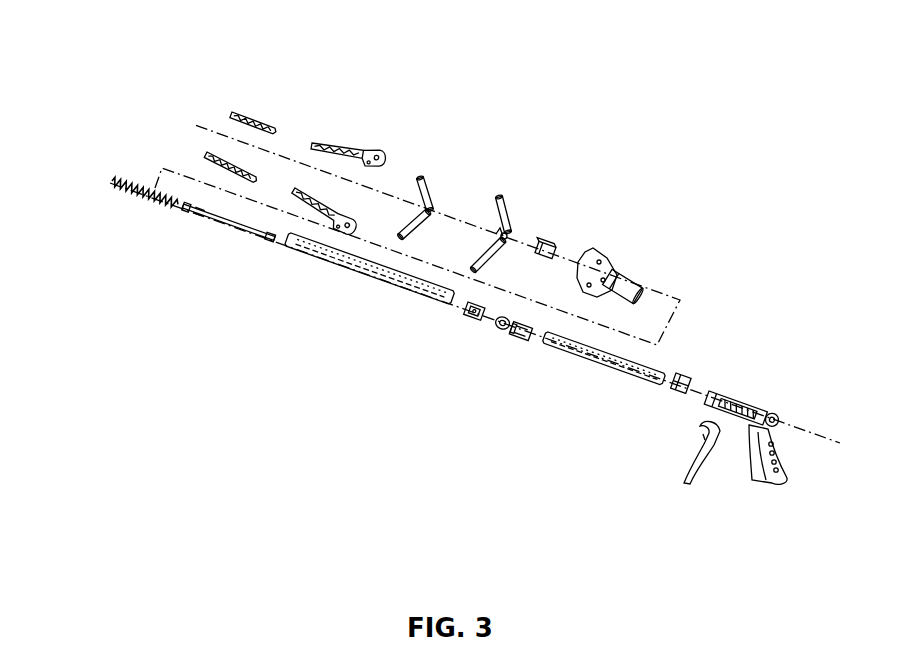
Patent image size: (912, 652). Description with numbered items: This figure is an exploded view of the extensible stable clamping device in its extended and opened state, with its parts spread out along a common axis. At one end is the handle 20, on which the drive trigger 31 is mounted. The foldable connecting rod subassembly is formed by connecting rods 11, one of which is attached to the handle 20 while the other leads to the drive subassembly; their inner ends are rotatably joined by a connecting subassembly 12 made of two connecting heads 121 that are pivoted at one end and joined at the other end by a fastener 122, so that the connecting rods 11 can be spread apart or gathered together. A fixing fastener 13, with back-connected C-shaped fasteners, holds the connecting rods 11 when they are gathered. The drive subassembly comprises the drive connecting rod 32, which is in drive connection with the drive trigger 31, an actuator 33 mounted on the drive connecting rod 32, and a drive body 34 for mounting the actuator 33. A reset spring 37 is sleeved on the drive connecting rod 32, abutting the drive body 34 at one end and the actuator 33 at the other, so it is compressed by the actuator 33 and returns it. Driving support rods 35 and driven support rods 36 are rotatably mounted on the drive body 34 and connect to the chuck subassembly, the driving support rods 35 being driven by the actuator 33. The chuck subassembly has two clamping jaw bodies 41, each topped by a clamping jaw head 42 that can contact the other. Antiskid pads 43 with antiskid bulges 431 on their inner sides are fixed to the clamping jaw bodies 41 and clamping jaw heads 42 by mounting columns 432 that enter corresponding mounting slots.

The connecting rod 11 is at (373, 273).
The connecting subassembly 12 is at (379, 377).
The connecting head 121 is at (473, 318).
The fastener 122 is at (520, 330).
The fixing fastener 13 is at (690, 378).
The handle 20 is at (755, 410).
The drive trigger 31 is at (695, 462).
The drive connecting rod 32 is at (215, 222).
The actuator 33 is at (553, 250).
The drive body 34 is at (618, 270).
The driving support rod 35 is at (507, 215).
The driven support rod 36 is at (430, 188).
The reset spring 37 is at (138, 200).
The clamping jaw body 41 is at (380, 150).
The clamping jaw head 42 is at (326, 148).
The antiskid pad 43 is at (188, 104).
The antiskid bulge 431 is at (218, 158).
The mounting column 432 is at (232, 112).